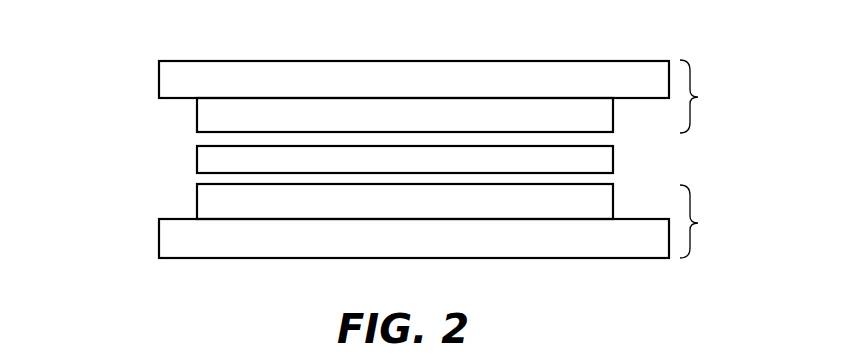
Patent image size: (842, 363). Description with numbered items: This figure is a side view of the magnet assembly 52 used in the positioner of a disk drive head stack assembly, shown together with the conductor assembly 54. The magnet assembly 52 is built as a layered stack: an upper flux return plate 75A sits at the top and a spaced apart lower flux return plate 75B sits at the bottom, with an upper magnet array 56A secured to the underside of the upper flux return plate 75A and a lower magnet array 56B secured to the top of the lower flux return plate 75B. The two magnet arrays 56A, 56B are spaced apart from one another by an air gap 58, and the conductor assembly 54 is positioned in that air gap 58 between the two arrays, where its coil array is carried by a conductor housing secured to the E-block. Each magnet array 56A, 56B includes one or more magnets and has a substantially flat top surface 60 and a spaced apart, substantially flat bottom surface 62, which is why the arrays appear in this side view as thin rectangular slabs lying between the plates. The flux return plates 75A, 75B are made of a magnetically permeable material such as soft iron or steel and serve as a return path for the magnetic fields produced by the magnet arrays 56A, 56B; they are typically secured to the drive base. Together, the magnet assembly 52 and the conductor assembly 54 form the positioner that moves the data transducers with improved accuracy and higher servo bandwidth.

The magnet assembly 52 is at (709, 159).
The conductor assembly 54 is at (613, 158).
The upper magnet array 56A is at (197, 117).
The lower magnet array 56B is at (197, 199).
The air gap 58 is at (195, 138).
The top surface 60 is at (300, 97).
The bottom surface 62 is at (397, 132).
The upper flux return plate 75A is at (159, 78).
The lower flux return plate 75B is at (159, 240).